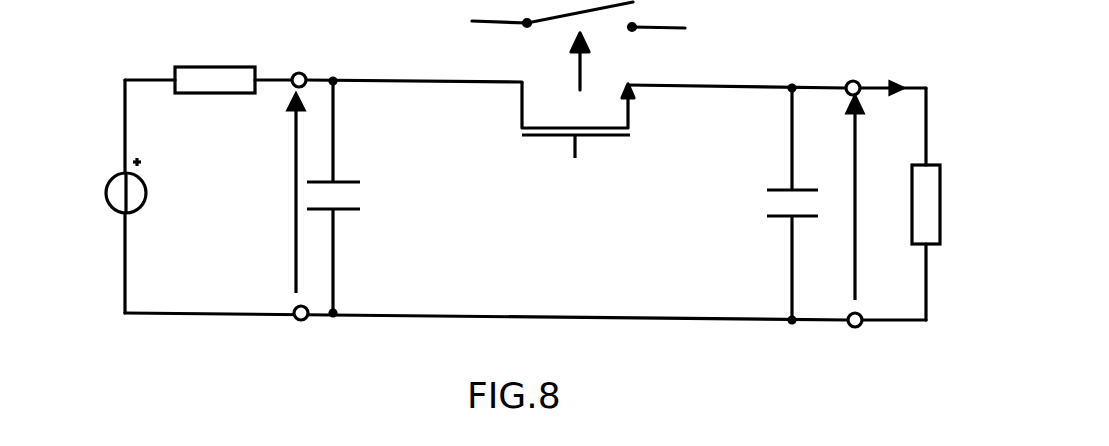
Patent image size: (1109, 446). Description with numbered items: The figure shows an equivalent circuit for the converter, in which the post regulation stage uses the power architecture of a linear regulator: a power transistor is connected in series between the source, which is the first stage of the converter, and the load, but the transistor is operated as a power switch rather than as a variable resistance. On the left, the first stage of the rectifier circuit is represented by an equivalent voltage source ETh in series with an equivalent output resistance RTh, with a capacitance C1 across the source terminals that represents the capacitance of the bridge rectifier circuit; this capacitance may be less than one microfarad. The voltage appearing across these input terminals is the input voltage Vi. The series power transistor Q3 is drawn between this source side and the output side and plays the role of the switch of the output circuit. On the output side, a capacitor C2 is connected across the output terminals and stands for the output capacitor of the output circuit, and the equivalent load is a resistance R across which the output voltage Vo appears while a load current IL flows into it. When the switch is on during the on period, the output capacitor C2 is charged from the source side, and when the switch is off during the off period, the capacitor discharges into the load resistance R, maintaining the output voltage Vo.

The equivalent output resistance RTh is at (215, 63).
The equivalent voltage source ETh is at (145, 185).
The input voltage Vi is at (279, 193).
The capacitance of the bridge rectifier circuit C1 is at (339, 197).
The MOSFET switch transistor Q3 is at (578, 137).
The output capacitor C2 is at (785, 204).
The output voltage Vo is at (869, 198).
The load current IL is at (897, 68).
The equivalent load resistance R is at (914, 204).